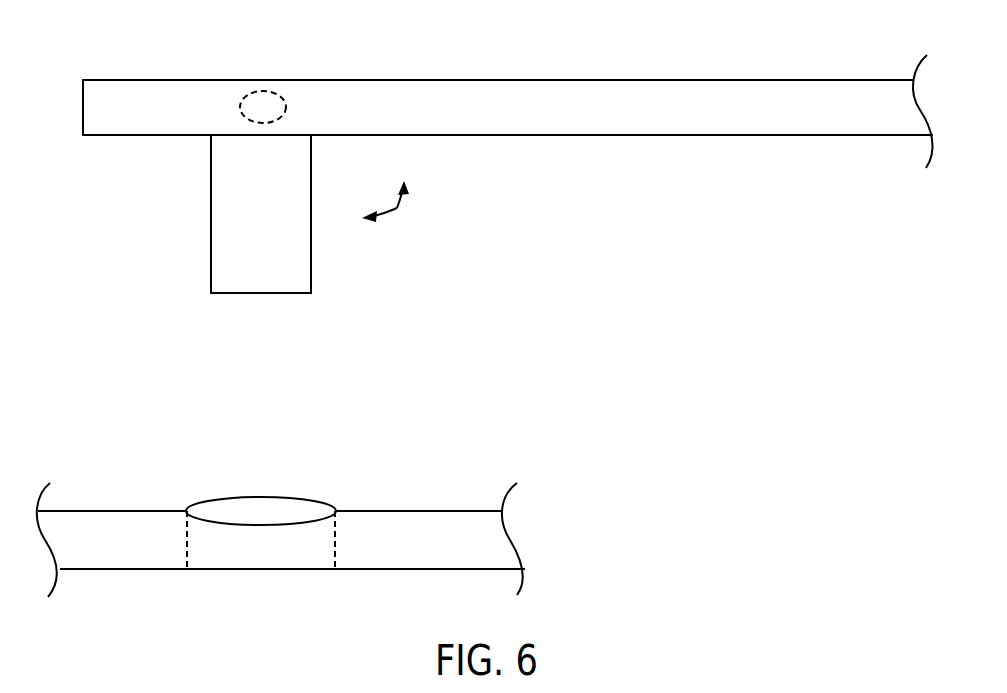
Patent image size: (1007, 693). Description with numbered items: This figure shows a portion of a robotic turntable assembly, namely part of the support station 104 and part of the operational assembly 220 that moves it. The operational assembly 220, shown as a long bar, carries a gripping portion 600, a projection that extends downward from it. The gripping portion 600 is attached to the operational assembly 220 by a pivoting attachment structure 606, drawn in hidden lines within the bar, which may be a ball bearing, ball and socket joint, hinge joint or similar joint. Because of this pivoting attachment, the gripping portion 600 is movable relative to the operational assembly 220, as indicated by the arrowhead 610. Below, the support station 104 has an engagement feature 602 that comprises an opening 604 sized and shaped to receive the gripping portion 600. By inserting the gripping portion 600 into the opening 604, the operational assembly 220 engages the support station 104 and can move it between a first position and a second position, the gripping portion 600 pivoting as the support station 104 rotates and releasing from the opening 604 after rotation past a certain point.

The support station 104 is at (443, 526).
The operational assembly 220 is at (570, 95).
The gripping portion 600 is at (298, 273).
The engagement feature 602 is at (172, 472).
The opening 604 is at (265, 508).
The pivoting attachment structure 606 is at (263, 91).
The arrowhead 610 is at (397, 208).